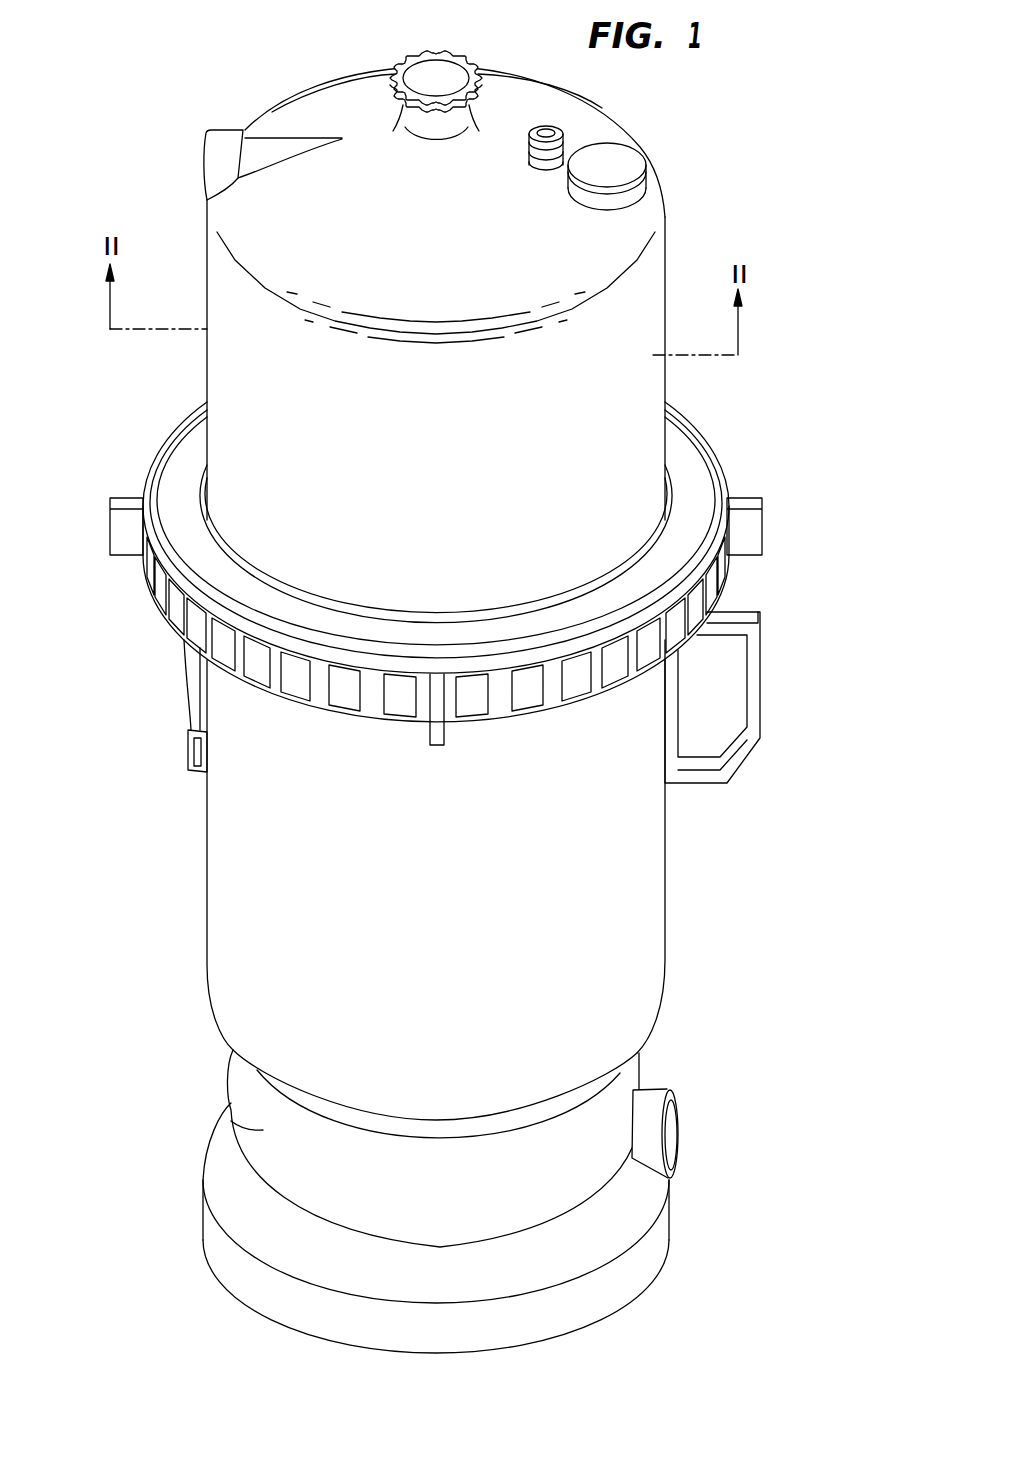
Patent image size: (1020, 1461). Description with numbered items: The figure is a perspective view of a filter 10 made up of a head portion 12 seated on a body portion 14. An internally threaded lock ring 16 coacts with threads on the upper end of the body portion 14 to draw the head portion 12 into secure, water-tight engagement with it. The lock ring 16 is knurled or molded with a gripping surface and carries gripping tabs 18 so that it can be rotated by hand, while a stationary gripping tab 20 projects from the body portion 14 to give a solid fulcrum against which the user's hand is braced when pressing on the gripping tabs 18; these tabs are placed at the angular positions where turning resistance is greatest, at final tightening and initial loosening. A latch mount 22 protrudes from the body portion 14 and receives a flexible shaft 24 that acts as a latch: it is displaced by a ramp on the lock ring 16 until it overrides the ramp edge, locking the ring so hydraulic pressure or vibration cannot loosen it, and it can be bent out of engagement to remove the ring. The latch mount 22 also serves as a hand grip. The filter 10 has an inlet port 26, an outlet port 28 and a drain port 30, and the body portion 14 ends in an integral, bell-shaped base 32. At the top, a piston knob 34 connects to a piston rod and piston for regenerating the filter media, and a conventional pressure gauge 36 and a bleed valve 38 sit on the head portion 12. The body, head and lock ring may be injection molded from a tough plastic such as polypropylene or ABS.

The filter 10 is at (104, 626).
The head portion 12 is at (643, 430).
The body portion 14 is at (237, 898).
The lock ring 16 is at (191, 409).
The gripping tabs 18 is at (117, 528).
The stationary gripping tab 20 is at (762, 640).
The latch mount 22 is at (197, 770).
The flexible shaft 24 is at (195, 675).
The inlet port 26 is at (228, 1085).
The outlet port 28 is at (220, 137).
The drain port 30 is at (668, 1125).
The bell-shaped base 32 is at (640, 1205).
The piston knob 34 is at (443, 65).
The pressure gauge 36 is at (622, 157).
The bleed valve 38 is at (563, 130).